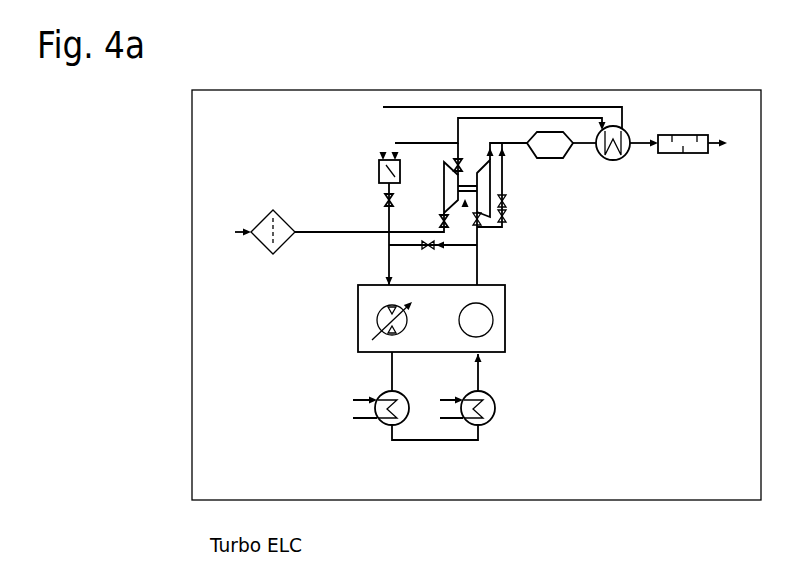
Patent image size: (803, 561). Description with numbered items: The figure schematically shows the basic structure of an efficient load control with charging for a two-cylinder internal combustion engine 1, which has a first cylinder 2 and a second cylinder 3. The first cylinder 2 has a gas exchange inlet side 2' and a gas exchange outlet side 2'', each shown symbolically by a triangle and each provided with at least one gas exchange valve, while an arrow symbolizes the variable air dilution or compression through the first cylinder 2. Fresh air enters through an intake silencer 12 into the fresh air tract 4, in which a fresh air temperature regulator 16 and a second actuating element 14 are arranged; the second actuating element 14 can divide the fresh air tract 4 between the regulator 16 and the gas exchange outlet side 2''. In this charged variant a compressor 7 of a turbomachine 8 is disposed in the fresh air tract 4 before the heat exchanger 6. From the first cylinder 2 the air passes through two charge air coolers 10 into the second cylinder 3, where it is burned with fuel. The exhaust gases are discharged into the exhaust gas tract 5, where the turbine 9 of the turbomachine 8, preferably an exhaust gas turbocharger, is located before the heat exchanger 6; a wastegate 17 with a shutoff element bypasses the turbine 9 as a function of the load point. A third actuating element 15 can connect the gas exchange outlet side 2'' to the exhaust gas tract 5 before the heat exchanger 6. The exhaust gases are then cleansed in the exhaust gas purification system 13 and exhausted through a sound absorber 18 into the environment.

The internal combustion engine 1 is at (506, 300).
The first cylinder 2 is at (373, 321).
The gas exchange inlet side 2' is at (359, 296).
The gas exchange outlet side 2'' is at (356, 344).
The second cylinder 3 is at (494, 322).
The fresh air tract 4 is at (312, 231).
The exhaust gas tract 5 is at (479, 236).
The heat exchanger 6 is at (612, 161).
The compressor 7 is at (444, 189).
The turbomachine 8 is at (464, 206).
The turbine 9 is at (492, 176).
The charge air coolers 10 is at (388, 426).
The intake silencer 12 is at (272, 211).
The exhaust gas purification system 13 is at (560, 158).
The second actuating element 14 is at (385, 200).
The third actuating element 15 is at (435, 249).
The fresh air temperature regulator 16 is at (379, 172).
The wastegate 17 is at (505, 190).
The sound absorber 18 is at (672, 153).